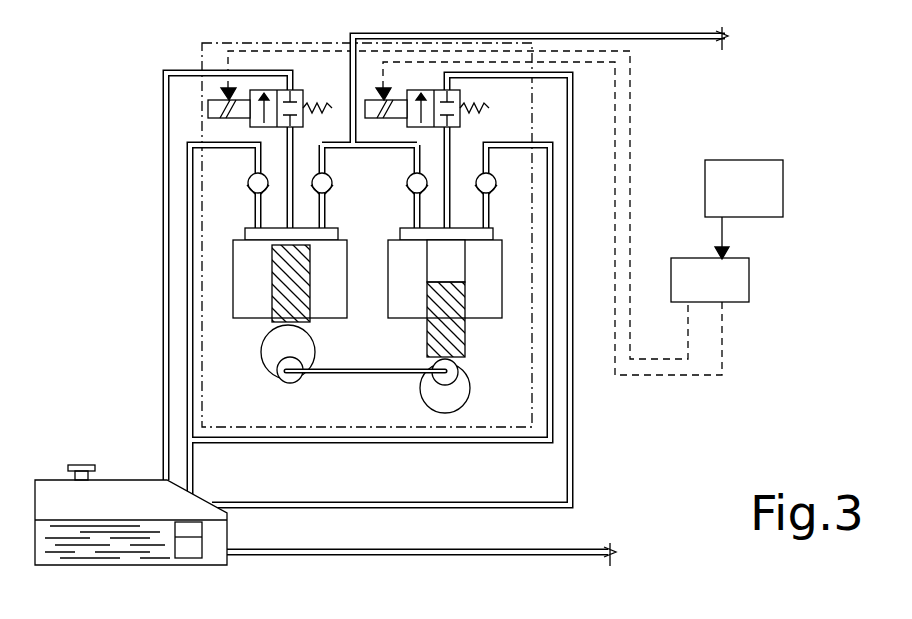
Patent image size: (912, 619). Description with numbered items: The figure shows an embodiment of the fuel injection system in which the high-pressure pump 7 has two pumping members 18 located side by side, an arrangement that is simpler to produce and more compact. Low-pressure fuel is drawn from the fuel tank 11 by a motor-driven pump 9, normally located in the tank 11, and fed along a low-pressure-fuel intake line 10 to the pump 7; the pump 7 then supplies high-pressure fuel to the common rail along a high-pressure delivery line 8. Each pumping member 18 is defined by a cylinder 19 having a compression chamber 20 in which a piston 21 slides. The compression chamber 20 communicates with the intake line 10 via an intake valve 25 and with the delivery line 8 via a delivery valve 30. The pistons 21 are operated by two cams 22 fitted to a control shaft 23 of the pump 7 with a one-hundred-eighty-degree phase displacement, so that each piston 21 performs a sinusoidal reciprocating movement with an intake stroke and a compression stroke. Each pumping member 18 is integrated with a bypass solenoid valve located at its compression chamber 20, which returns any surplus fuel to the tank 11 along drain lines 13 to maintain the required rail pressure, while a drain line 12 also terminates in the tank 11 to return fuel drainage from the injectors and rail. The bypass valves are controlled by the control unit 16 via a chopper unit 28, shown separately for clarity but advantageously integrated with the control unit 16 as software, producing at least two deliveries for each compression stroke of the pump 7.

The high-pressure pump 7 is at (202, 128).
The high-pressure delivery line 8 is at (672, 40).
The motor-driven pump 9 is at (183, 537).
The low-pressure-fuel intake line 10 is at (190, 392).
The fuel tank 11 is at (62, 480).
The drain line 12 is at (565, 552).
The drain lines 13 is at (163, 325).
The control unit 16 is at (777, 200).
The pumping member 18 is at (382, 205).
The cylinder 19 is at (392, 293).
The compression chamber 20 is at (458, 262).
The piston 21 is at (282, 297).
The cam 22 is at (273, 355).
The control shaft 23 is at (375, 374).
The intake valve 25 is at (248, 187).
The chopper unit 28 is at (745, 298).
The delivery valve 30 is at (500, 186).